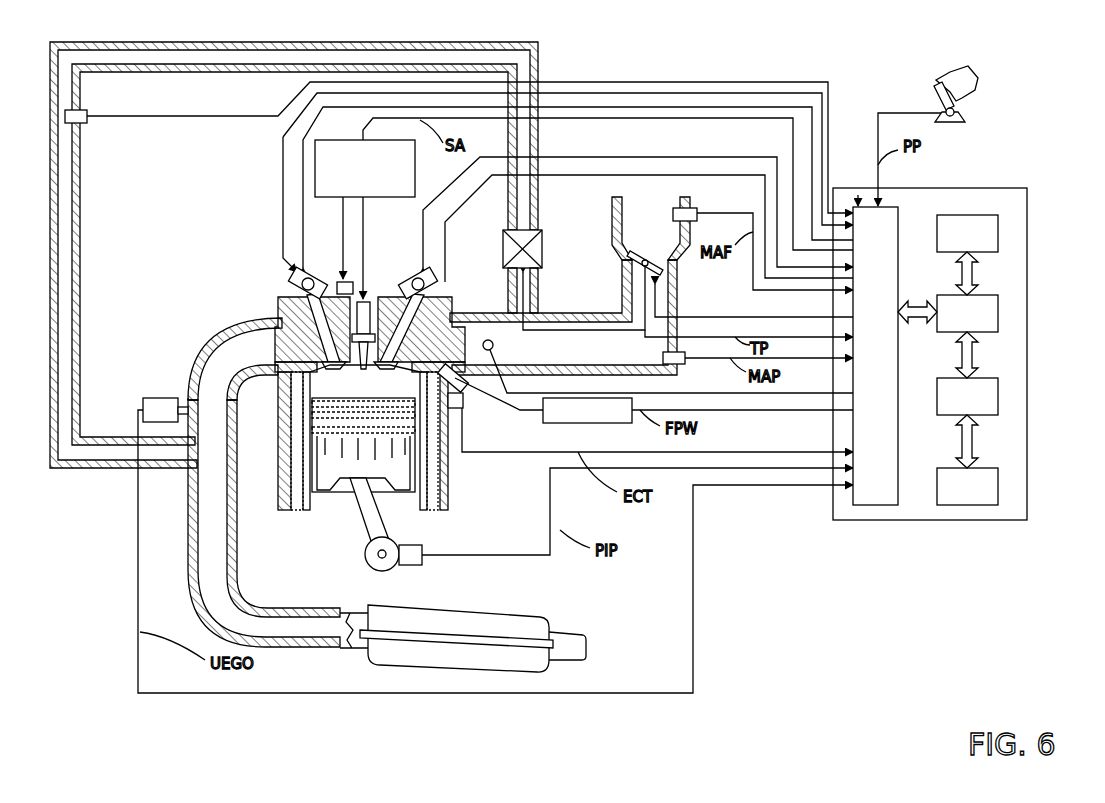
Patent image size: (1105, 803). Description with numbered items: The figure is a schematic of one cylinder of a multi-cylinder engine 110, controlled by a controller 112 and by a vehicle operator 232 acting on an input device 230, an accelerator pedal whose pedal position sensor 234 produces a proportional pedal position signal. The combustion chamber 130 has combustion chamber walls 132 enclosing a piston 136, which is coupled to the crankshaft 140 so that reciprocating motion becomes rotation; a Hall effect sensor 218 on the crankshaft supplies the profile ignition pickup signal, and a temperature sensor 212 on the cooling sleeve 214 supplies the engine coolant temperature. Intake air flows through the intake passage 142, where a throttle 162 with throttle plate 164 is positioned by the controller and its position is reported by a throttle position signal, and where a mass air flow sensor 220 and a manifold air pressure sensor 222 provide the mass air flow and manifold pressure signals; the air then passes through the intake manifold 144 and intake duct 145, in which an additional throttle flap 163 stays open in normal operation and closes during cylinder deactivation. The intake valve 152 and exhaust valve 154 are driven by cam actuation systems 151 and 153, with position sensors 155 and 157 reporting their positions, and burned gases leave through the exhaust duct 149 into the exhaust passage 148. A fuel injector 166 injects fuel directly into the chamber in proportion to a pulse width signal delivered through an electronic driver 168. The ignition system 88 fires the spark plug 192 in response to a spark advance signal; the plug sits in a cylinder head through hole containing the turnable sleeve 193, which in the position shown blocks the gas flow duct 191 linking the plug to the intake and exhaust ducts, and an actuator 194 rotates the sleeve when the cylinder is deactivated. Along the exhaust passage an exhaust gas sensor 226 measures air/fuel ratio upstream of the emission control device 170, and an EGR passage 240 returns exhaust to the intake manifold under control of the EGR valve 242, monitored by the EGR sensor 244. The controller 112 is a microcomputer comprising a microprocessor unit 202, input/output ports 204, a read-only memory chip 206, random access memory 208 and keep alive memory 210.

The EGR passage 240 is at (288, 43).
The EGR sensor 244 is at (83, 123).
The engine 110 is at (200, 222).
The ignition system 88 is at (326, 140).
The EGR valve 242 is at (542, 252).
The intake passage 142 is at (651, 228).
The intake manifold 144 is at (563, 317).
The throttle plate 164 is at (630, 264).
The throttle 162 is at (668, 265).
The mass air flow sensor 220 is at (692, 208).
The manifold air pressure sensor 222 is at (680, 365).
The throttle flap 163 is at (495, 346).
The exhaust duct 149 is at (240, 359).
The intake duct 145 is at (454, 353).
The exhaust cam actuation system 153 is at (295, 268).
The exhaust valve position sensor 157 is at (300, 281).
The exhaust valve 154 is at (305, 345).
The intake cam actuation system 151 is at (412, 272).
The intake valve position sensor 155 is at (435, 288).
The intake valve 152 is at (430, 335).
The actuator 194 is at (337, 280).
The spark plug 192 is at (360, 300).
The gas flow duct 191 is at (368, 315).
The combustion chamber 130 is at (290, 470).
The turnable sleeve 193 is at (291, 440).
The combustion chamber walls 132 is at (316, 510).
The piston 136 is at (352, 480).
The crankshaft 140 is at (375, 570).
The Hall effect sensor 218 is at (414, 566).
The temperature sensor 212 is at (460, 410).
The cooling sleeve 214 is at (447, 475).
The fuel injector 166 is at (462, 388).
The electronic driver 168 is at (556, 423).
The exhaust passage 148 is at (264, 506).
The exhaust gas sensor 226 is at (143, 402).
The emission control device 170 is at (510, 612).
The controller 112 is at (1022, 188).
The input/output ports 204 is at (898, 210).
The read-only memory chip 206 is at (998, 232).
The microprocessor unit 202 is at (998, 312).
The random access memory 208 is at (998, 395).
The keep alive memory 210 is at (998, 485).
The input device 230 is at (934, 92).
The vehicle operator 232 is at (982, 78).
The pedal position sensor 234 is at (965, 118).